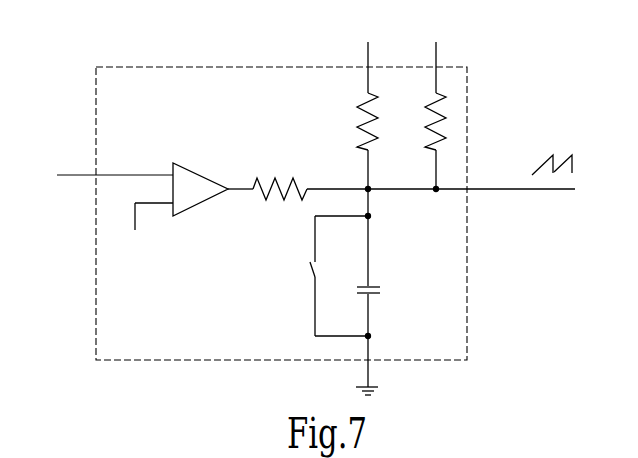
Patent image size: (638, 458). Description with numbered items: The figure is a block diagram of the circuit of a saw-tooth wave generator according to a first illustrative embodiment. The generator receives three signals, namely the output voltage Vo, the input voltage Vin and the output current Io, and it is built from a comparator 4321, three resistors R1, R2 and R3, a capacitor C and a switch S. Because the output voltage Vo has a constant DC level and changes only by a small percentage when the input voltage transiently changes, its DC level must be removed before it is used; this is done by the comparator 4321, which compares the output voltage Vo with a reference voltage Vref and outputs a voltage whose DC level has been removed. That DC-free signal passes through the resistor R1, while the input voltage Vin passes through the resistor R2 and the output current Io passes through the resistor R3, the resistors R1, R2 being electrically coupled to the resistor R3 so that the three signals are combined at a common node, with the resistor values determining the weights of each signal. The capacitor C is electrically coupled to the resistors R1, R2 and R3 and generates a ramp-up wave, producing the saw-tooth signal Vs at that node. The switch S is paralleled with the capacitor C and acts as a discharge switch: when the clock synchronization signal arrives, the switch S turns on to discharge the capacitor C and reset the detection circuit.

The comparator 4321 is at (190, 167).
The resistor R1 is at (280, 203).
The resistor R2 is at (354, 121).
The resistor R3 is at (425, 121).
The switch S is at (328, 276).
The capacitor C is at (379, 292).
The output voltage Vo is at (101, 165).
The reference voltage Vref is at (146, 231).
The input voltage Vin is at (360, 56).
The output current Io is at (439, 56).
The saw-tooth wave output Vs is at (569, 174).